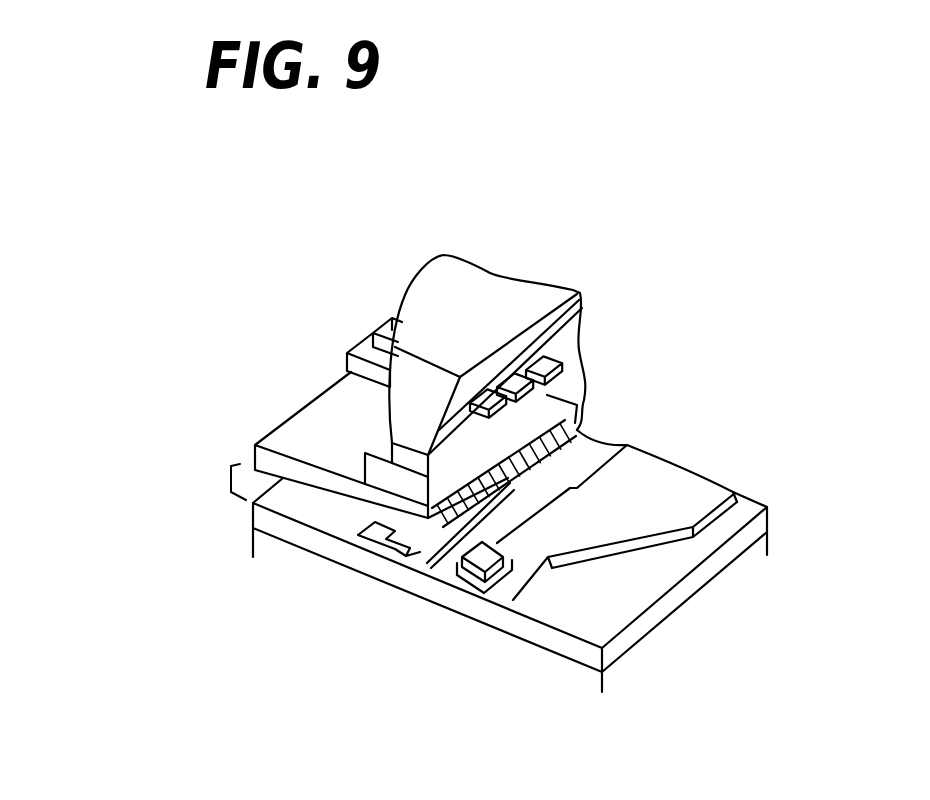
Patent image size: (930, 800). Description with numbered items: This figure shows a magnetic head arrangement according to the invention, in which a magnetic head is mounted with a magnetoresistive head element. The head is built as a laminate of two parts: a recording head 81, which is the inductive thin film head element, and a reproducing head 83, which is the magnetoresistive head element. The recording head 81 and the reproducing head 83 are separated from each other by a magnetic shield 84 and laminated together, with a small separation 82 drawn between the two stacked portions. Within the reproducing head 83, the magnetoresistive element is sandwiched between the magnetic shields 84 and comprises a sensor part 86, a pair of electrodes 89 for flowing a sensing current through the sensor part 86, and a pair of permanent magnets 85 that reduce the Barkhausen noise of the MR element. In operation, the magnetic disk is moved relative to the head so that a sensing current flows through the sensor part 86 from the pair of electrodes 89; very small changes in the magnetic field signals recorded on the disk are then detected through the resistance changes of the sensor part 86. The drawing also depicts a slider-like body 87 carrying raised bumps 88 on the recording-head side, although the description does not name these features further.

The recording head 81 is at (361, 383).
The gap between assemblies 82 is at (226, 478).
The reproducing head 83 is at (451, 550).
The magnetic shield 84 is at (324, 496).
The permanent magnets 85 is at (392, 556).
The sensor part 86 is at (429, 570).
The slider block 87 is at (356, 469).
The contact bumps 88 is at (366, 343).
The electrodes 89 is at (681, 487).